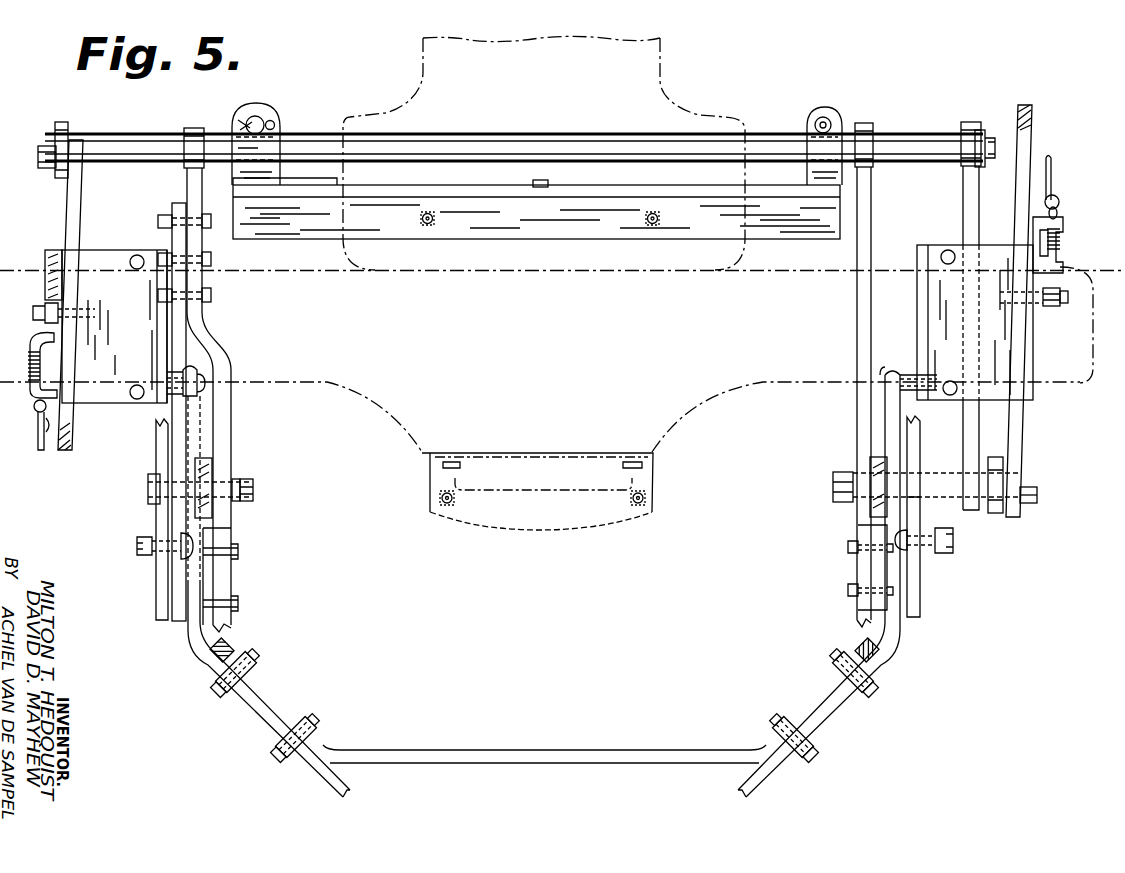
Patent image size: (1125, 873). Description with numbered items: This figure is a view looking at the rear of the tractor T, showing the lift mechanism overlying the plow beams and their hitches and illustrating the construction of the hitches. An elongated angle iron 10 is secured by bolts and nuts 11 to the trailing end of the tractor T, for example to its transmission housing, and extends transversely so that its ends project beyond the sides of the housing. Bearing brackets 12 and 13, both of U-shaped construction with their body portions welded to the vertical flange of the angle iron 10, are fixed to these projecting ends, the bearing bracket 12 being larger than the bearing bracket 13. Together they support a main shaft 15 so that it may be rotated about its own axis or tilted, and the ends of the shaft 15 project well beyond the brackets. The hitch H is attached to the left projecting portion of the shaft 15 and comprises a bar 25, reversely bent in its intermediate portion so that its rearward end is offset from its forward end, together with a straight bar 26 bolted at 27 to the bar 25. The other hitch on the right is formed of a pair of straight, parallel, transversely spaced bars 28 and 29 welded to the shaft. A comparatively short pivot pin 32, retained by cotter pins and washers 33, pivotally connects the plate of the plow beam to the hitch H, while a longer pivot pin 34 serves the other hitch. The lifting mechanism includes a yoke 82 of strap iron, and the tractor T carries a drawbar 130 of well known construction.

The angle iron 10 is at (580, 237).
The bolts and nuts 11 is at (548, 183).
The bearing bracket 12 is at (268, 110).
The bearing bracket 13 is at (840, 108).
The main shaft 15 is at (500, 141).
The bar 25 is at (206, 324).
The straight bar 26 is at (178, 355).
The bolts 27 is at (211, 295).
The bar 28 is at (856, 323).
The bar 29 is at (975, 208).
The pivot pin 32 is at (243, 482).
The cotter pins and washers 33 is at (256, 492).
The pivot pin 34 is at (948, 490).
The yoke 82 is at (260, 706).
The drawbar 130 is at (608, 508).
The tractor T is at (690, 111).
The hitch H is at (233, 432).